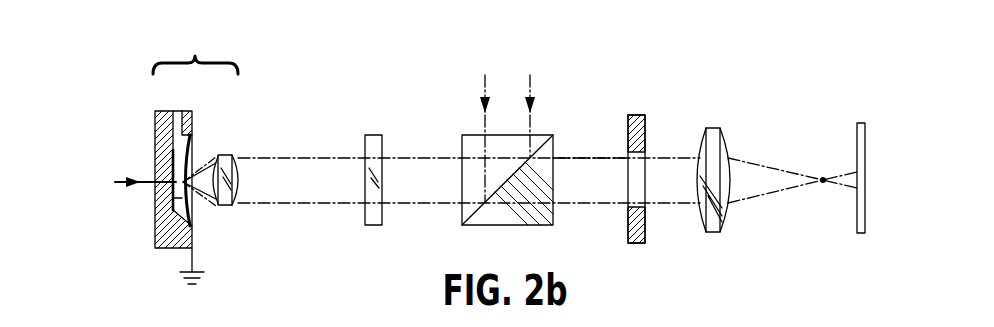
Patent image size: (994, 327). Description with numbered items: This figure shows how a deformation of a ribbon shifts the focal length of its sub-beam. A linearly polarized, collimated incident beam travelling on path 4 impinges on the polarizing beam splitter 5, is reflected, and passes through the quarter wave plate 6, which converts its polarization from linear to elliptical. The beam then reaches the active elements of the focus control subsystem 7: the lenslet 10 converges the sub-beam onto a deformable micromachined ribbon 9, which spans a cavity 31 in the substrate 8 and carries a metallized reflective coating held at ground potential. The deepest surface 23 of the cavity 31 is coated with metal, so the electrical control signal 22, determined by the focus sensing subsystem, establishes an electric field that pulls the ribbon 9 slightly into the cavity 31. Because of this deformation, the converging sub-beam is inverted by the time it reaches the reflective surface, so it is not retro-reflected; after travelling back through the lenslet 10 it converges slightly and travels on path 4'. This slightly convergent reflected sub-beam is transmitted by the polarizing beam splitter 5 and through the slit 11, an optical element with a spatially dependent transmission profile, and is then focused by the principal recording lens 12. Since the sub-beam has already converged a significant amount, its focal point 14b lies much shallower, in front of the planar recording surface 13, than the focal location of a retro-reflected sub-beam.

The focus control subsystem 7 is at (163, 169).
The substrate 8 is at (160, 249).
The deformable micromachined ribbon 9 is at (188, 203).
The lenslet 10 is at (220, 153).
The control signal 22 is at (147, 179).
The deepest surface of the cavity 23 is at (172, 198).
The cavity 31 is at (178, 150).
The incident beam path 4 is at (469, 120).
The reflected sub-beam path 4' is at (590, 131).
The polarizing beam splitter 5 is at (553, 216).
The quarter wave plate 6 is at (377, 135).
The optical element (slit) 11 is at (640, 115).
The principal recording lens 12 is at (710, 128).
The recording surface 13 is at (860, 123).
The focal location 14b is at (823, 178).